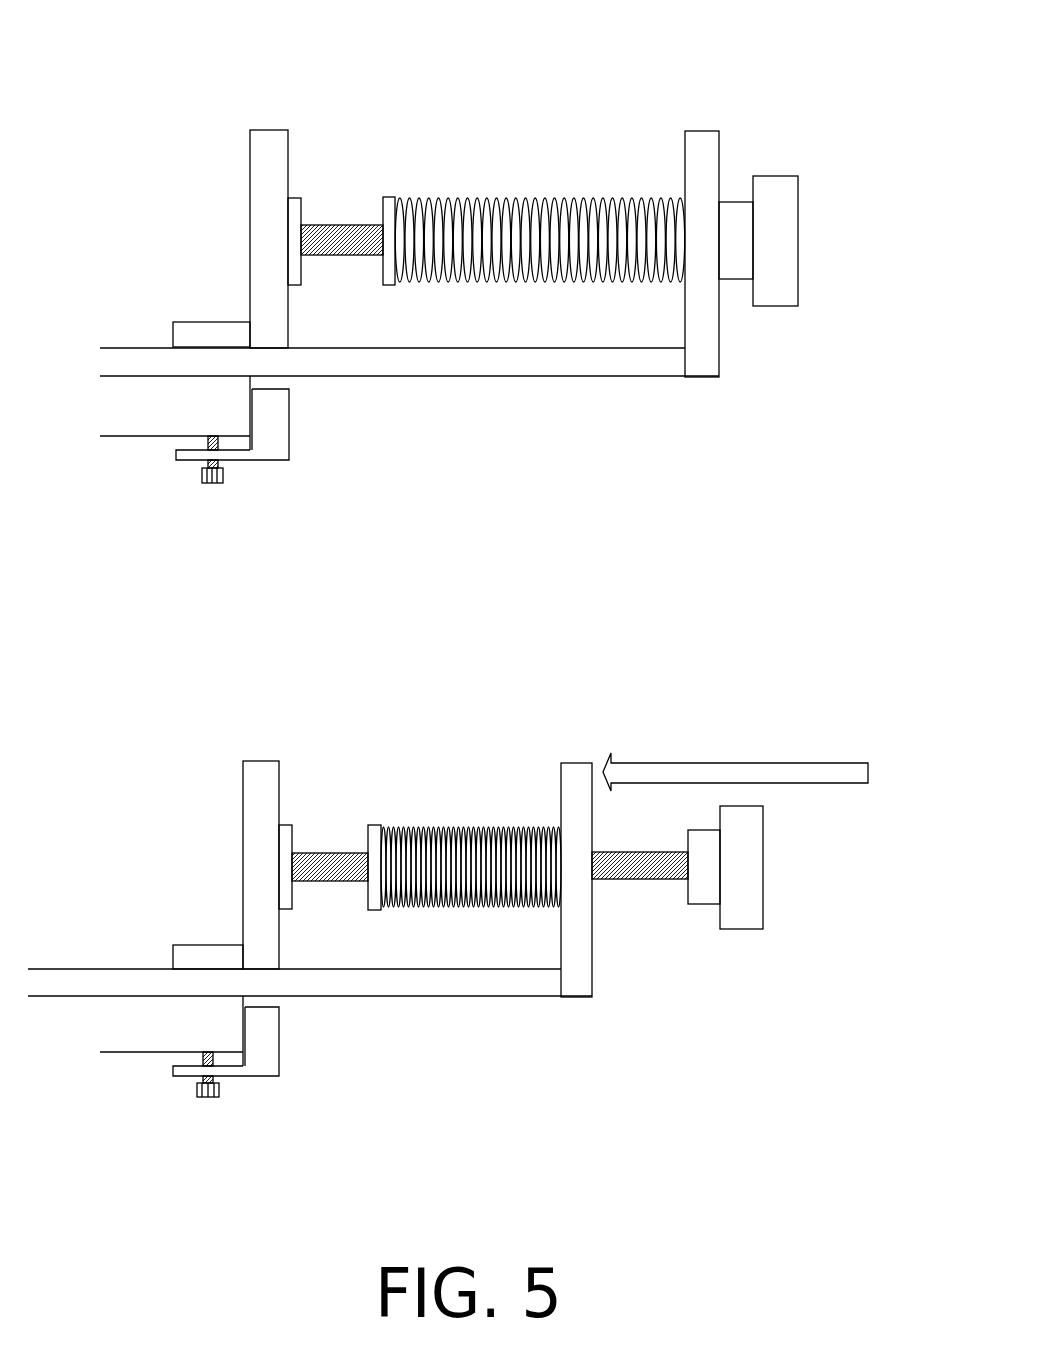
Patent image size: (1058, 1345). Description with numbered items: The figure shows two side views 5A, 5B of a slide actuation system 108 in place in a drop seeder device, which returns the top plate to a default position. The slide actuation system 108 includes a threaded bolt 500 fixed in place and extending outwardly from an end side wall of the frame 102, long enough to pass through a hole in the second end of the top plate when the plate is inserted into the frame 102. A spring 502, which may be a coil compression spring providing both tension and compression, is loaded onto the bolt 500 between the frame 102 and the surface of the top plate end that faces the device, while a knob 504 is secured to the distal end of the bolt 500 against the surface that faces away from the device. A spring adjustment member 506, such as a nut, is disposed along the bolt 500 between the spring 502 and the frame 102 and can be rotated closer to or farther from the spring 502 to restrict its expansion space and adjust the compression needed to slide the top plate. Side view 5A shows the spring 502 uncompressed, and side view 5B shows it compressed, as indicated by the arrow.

The frame 102 is at (248, 210).
The slide actuation system 108 is at (643, 62).
The threaded bolt 500 is at (342, 222).
The spring 502 is at (575, 198).
The knob 504 is at (778, 176).
The spring adjustment member 506 is at (392, 283).
The side view 5A is at (631, 403).
The side view 5B is at (713, 1070).